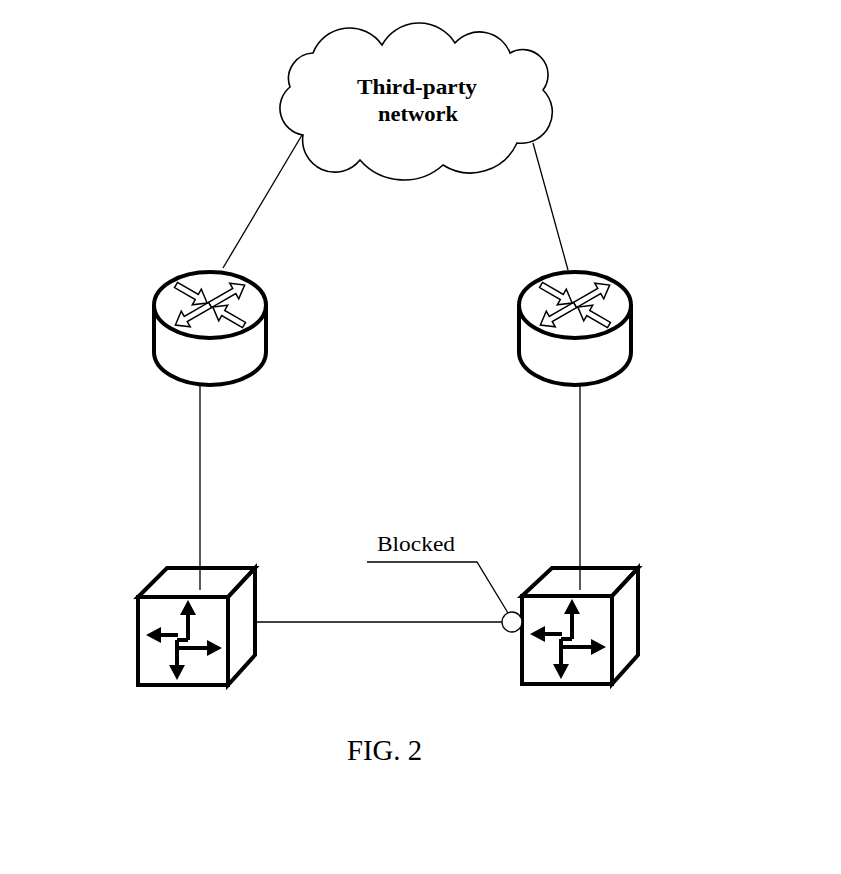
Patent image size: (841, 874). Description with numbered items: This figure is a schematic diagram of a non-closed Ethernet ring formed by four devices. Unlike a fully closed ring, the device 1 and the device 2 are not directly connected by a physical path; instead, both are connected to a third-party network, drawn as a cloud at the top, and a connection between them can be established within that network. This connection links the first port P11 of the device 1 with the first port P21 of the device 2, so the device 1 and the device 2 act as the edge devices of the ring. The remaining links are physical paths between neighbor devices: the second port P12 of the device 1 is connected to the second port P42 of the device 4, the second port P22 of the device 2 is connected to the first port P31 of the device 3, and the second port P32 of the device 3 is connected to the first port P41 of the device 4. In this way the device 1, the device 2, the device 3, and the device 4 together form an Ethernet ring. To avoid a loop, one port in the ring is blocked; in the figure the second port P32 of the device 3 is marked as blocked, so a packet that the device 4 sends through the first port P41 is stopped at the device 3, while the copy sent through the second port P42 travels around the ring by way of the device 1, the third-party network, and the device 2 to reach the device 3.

The device 1 is at (151, 328).
The device 2 is at (625, 328).
The device 3 is at (630, 626).
The device 4 is at (144, 626).
The first port P11 is at (262, 204).
The second port P12 is at (230, 476).
The first port P21 is at (536, 206).
The second port P22 is at (549, 476).
The first port P31 is at (609, 560).
The second port P32 is at (444, 619).
The first port P41 is at (378, 642).
The second port P42 is at (230, 556).